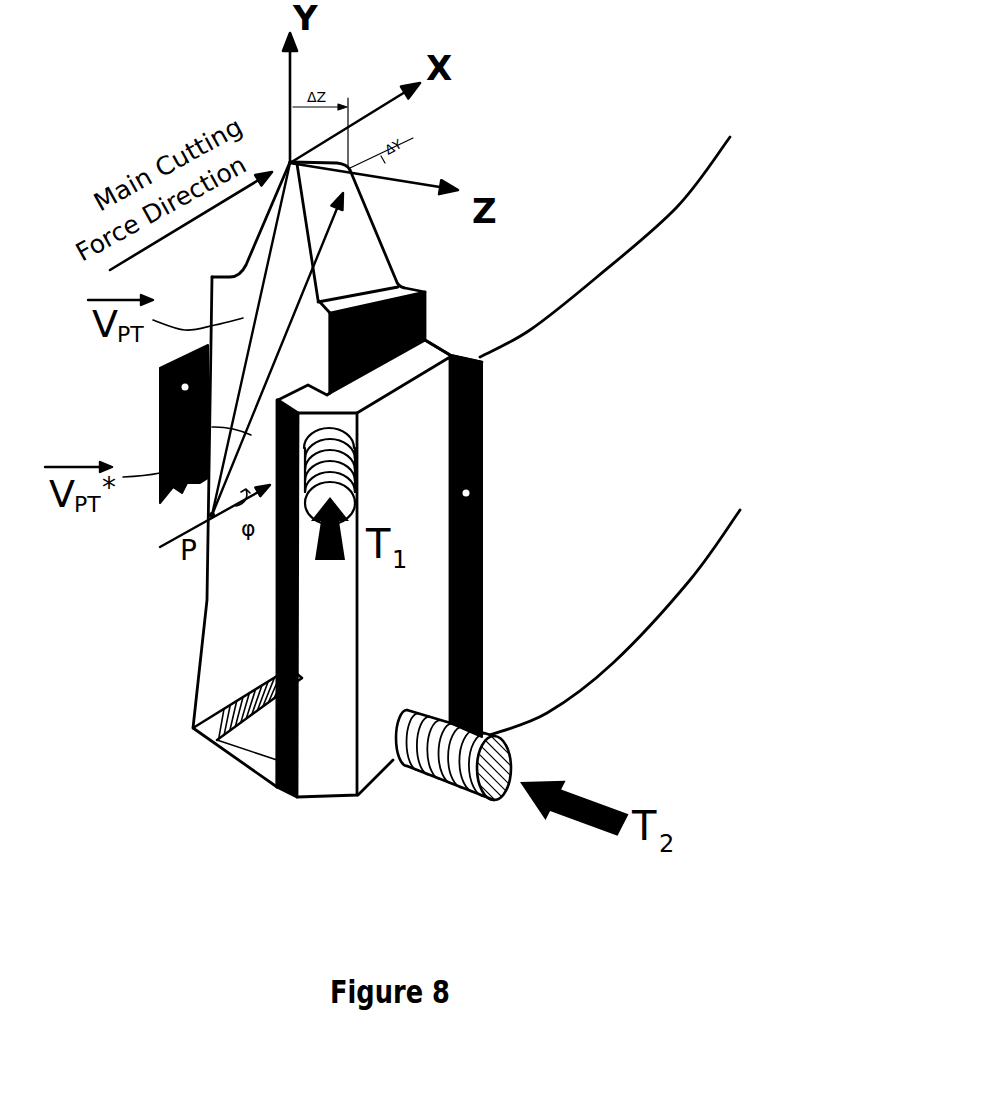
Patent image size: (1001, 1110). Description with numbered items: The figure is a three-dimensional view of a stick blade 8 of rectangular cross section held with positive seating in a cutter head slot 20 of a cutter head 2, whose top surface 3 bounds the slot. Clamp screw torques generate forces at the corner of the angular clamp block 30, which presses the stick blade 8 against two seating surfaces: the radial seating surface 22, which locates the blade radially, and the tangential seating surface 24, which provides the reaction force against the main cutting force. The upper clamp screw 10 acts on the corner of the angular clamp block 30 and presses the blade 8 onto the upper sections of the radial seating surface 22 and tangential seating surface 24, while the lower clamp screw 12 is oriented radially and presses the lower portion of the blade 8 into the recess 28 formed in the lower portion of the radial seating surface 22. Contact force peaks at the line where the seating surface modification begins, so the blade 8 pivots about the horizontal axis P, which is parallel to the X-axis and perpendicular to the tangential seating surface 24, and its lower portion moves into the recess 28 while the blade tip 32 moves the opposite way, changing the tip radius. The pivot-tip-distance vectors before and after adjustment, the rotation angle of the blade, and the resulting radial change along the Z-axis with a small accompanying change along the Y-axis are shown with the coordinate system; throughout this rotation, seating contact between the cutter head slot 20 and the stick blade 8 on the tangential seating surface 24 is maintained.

The cutter head 2 is at (665, 282).
The top surface 3 is at (683, 133).
The stick blade 8 is at (240, 603).
The upper clamp screw 10 is at (342, 437).
The lower clamp screw 12 is at (423, 777).
The cutter head slot 20 is at (460, 343).
The radial seating surface 22 is at (160, 395).
The tangential seating surface 24 is at (470, 493).
The recess 28 is at (240, 743).
The angular clamp block 30 is at (410, 640).
The blade tip 32 is at (280, 152).